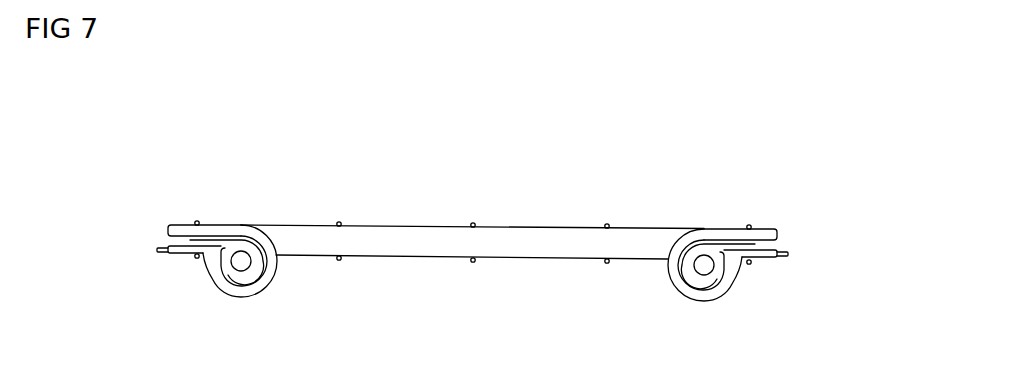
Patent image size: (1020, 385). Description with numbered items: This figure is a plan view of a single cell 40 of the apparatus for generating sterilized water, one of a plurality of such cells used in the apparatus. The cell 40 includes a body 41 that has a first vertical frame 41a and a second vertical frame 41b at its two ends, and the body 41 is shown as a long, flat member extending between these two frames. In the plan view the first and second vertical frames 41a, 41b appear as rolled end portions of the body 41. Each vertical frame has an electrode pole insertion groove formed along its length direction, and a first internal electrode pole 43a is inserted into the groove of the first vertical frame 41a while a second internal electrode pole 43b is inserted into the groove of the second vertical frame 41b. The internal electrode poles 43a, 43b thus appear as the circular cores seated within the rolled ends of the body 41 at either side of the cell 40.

The cell 40 is at (716, 181).
The body 41 is at (405, 227).
The first vertical frame 41a is at (178, 255).
The second vertical frame 41b is at (767, 262).
The first internal electrode pole 43a is at (217, 284).
The second internal electrode pole 43b is at (718, 292).